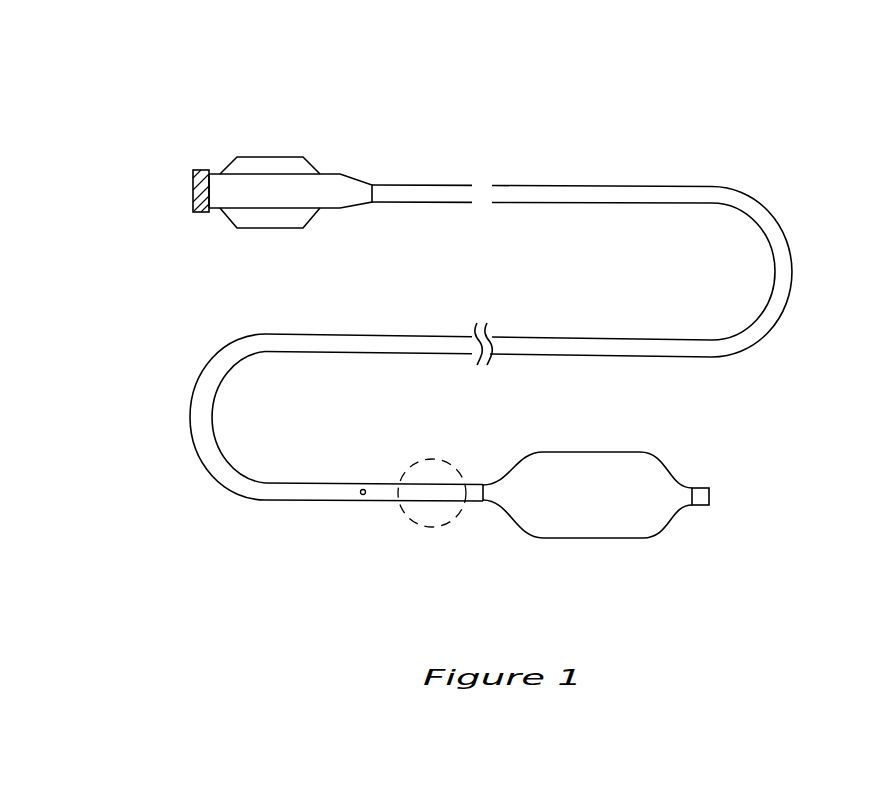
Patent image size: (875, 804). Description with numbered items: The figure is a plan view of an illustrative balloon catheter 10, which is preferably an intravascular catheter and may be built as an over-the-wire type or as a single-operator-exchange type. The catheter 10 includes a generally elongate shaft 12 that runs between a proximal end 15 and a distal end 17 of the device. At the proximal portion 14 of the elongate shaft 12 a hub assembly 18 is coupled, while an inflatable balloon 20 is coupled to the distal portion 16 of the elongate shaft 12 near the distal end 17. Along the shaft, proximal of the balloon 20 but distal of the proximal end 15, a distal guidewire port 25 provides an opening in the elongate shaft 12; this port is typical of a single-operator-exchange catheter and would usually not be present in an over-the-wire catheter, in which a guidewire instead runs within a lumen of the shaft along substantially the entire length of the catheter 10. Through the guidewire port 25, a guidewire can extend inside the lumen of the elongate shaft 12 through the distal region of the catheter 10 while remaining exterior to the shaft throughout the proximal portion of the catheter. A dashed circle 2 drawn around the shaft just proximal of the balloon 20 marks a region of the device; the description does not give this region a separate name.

The catheter 10 is at (629, 88).
The elongate shaft 12 is at (773, 217).
The proximal portion 14 is at (391, 170).
The proximal end 15 is at (193, 185).
The distal portion 16 is at (466, 552).
The distal end 17 is at (709, 505).
The hub assembly 18 is at (263, 128).
The inflatable balloon 20 is at (623, 446).
The distal guidewire port 25 is at (362, 489).
The detail region shown in FIG. 2 is at (418, 523).